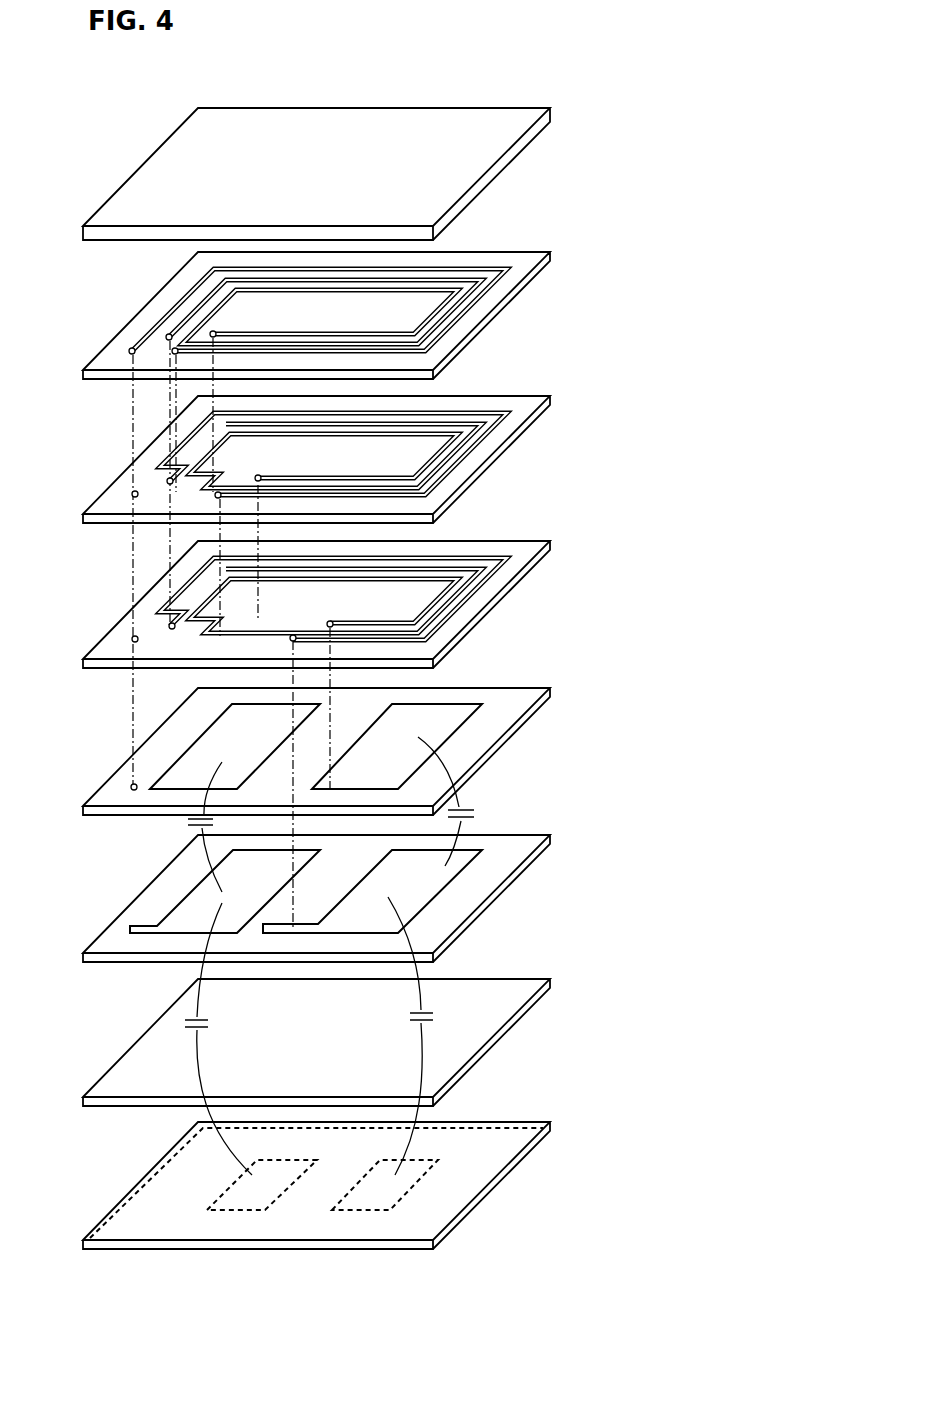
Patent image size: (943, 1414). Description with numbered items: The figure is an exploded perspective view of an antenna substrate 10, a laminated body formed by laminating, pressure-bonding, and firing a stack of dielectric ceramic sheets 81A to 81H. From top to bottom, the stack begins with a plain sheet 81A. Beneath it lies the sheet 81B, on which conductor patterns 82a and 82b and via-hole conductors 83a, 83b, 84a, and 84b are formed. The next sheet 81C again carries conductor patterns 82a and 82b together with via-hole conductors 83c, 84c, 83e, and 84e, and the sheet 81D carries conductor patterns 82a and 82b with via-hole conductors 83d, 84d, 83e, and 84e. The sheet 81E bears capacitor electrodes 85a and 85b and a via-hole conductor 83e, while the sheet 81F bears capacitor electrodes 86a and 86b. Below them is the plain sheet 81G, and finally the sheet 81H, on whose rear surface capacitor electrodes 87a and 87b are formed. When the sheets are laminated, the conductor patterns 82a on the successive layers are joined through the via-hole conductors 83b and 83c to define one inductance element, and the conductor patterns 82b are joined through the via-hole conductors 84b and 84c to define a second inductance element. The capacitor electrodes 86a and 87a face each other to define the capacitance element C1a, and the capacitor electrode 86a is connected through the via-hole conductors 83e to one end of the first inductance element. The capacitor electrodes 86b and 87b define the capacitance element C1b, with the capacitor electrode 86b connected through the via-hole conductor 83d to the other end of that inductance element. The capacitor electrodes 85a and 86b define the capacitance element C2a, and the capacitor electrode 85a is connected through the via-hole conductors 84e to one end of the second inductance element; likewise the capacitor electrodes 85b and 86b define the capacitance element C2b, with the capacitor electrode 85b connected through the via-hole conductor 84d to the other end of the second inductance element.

The antenna substrate 10 is at (135, 93).
The plain sheet 81A is at (113, 189).
The sheet 81B is at (122, 327).
The sheet 81C is at (126, 470).
The sheet 81D is at (128, 614).
The sheet 81E is at (125, 768).
The sheet 81F is at (107, 932).
The sheet 81G is at (106, 1076).
The sheet 81H is at (107, 1215).
The conductor pattern 82a is at (496, 264).
The conductor pattern 82b is at (452, 303).
The via-hole conductor 83a is at (130, 350).
The via-hole conductor 83b is at (178, 347).
The via-hole conductor 83c is at (221, 493).
The via-hole conductor 83d is at (293, 634).
The via-hole conductor 83e is at (132, 493).
The via-hole conductor 84a is at (168, 333).
The via-hole conductor 84b is at (216, 334).
The via-hole conductor 84c is at (261, 479).
The via-hole conductor 84d is at (333, 624).
The via-hole conductor 84e is at (169, 478).
The capacitor electrode 85a is at (235, 720).
The capacitor electrode 85b is at (450, 715).
The capacitor electrode 86a is at (197, 898).
The capacitor electrode 86b is at (420, 880).
The capacitor electrode 87a is at (283, 1193).
The capacitor electrode 87b is at (403, 1193).
The capacitance element C1a is at (224, 1039).
The capacitance element C1b is at (438, 1036).
The capacitance element C2a is at (181, 827).
The capacitance element C2b is at (472, 801).